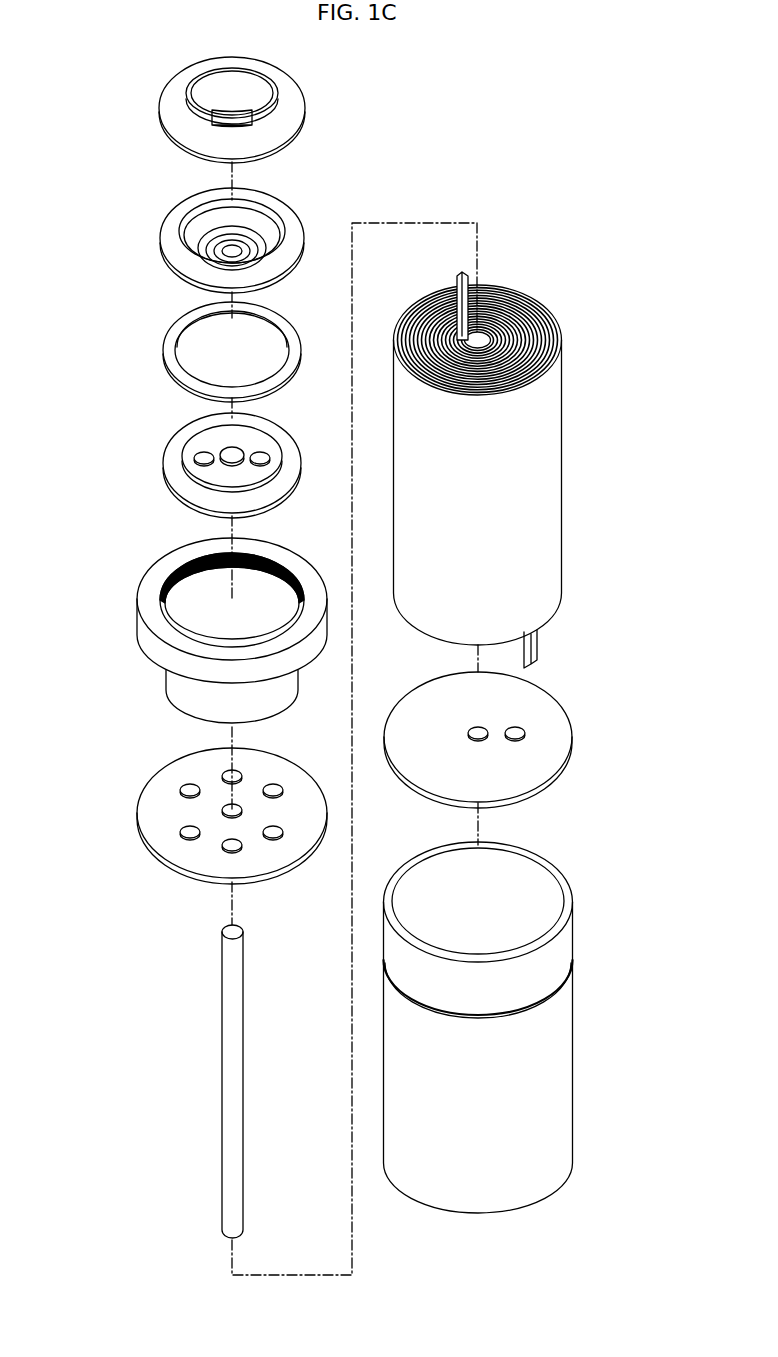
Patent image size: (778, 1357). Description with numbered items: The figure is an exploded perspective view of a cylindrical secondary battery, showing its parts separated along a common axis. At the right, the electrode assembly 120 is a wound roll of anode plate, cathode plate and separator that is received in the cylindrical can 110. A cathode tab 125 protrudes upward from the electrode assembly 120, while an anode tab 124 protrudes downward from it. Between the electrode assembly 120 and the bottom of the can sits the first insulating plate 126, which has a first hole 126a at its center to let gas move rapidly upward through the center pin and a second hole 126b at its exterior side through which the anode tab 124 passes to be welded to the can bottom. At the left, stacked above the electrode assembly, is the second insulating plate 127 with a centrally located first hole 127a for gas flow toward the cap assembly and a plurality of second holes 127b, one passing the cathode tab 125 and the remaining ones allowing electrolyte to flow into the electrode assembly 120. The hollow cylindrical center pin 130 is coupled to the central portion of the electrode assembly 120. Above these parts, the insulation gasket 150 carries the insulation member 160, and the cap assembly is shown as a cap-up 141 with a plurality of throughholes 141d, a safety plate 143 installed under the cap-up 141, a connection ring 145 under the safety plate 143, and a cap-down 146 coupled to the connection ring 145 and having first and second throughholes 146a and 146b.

The cylindrical can 110 is at (574, 1066).
The electrode assembly 120 is at (565, 478).
The anode tab 124 is at (537, 640).
The cathode tab 125 is at (458, 278).
The first insulating plate 126 is at (526, 750).
The first hole 126a is at (483, 727).
The second hole 126b is at (520, 728).
The second insulating plate 127 is at (188, 802).
The first hole 127a is at (226, 809).
The second holes 127b is at (188, 784).
The center pin 130 is at (224, 1072).
The cap-up 141 is at (202, 87).
The throughholes 141d is at (212, 125).
The safety plate 143 is at (162, 232).
The connection ring 145 is at (167, 350).
The cap-down 146 is at (180, 477).
The first throughhole 146a is at (226, 451).
The second throughholes 146b is at (200, 455).
The insulation gasket 150 is at (138, 634).
The insulation member 160 is at (200, 558).